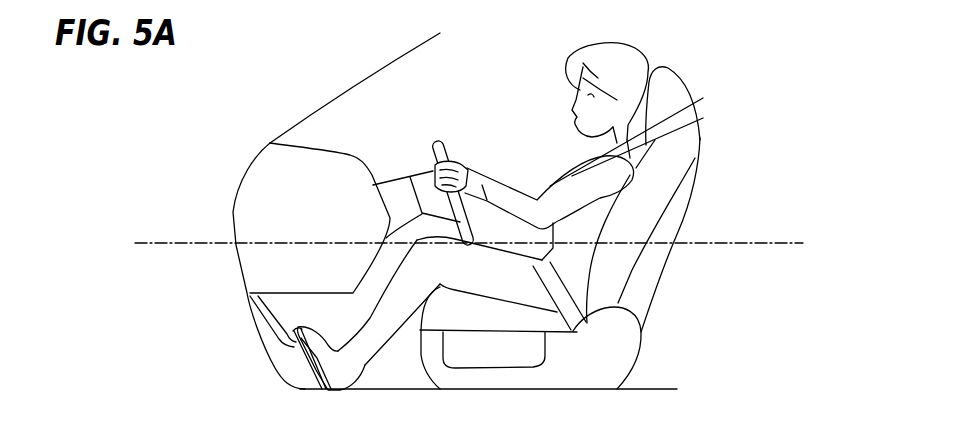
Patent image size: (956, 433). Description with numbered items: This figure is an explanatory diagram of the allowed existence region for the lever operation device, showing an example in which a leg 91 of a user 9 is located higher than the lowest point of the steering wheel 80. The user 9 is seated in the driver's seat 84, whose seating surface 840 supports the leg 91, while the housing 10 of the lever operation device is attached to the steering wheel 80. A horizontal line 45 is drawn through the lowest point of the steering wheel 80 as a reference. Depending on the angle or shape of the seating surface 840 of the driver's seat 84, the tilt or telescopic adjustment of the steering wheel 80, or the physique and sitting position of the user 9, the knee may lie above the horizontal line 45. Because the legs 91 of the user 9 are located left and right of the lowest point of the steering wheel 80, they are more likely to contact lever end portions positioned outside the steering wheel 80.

The user 9 is at (646, 57).
The housing 10 is at (422, 178).
The steering wheel 80 is at (438, 143).
The horizontal line 45 is at (483, 247).
The driver's seat 84 is at (660, 277).
The seating surface 840 is at (615, 360).
The leg 91 is at (467, 273).